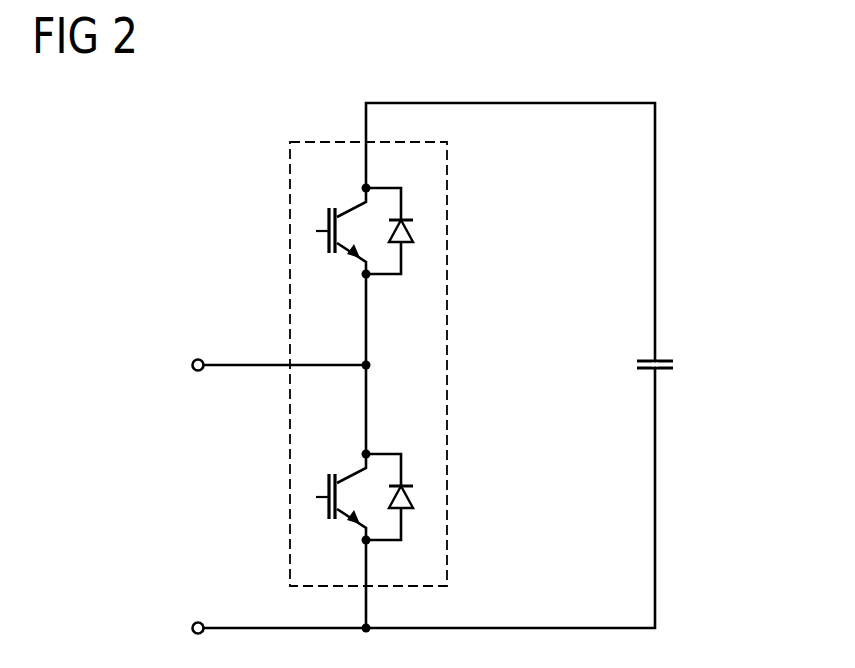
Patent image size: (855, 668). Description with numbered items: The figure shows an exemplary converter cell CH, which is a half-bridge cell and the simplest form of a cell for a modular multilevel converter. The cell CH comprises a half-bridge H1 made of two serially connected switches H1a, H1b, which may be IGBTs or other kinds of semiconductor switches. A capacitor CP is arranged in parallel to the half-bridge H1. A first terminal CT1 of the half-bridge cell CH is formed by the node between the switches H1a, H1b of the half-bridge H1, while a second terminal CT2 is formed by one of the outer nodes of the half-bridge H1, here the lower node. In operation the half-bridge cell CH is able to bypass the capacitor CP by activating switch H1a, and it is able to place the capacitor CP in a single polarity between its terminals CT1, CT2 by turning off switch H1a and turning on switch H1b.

The half-bridge cell CH is at (679, 149).
The half-bridge H1 is at (448, 170).
The switch H1a is at (328, 218).
The switch H1b is at (328, 484).
The first terminal CT1 is at (193, 362).
The second terminal CT2 is at (193, 626).
The capacitor CP is at (665, 360).